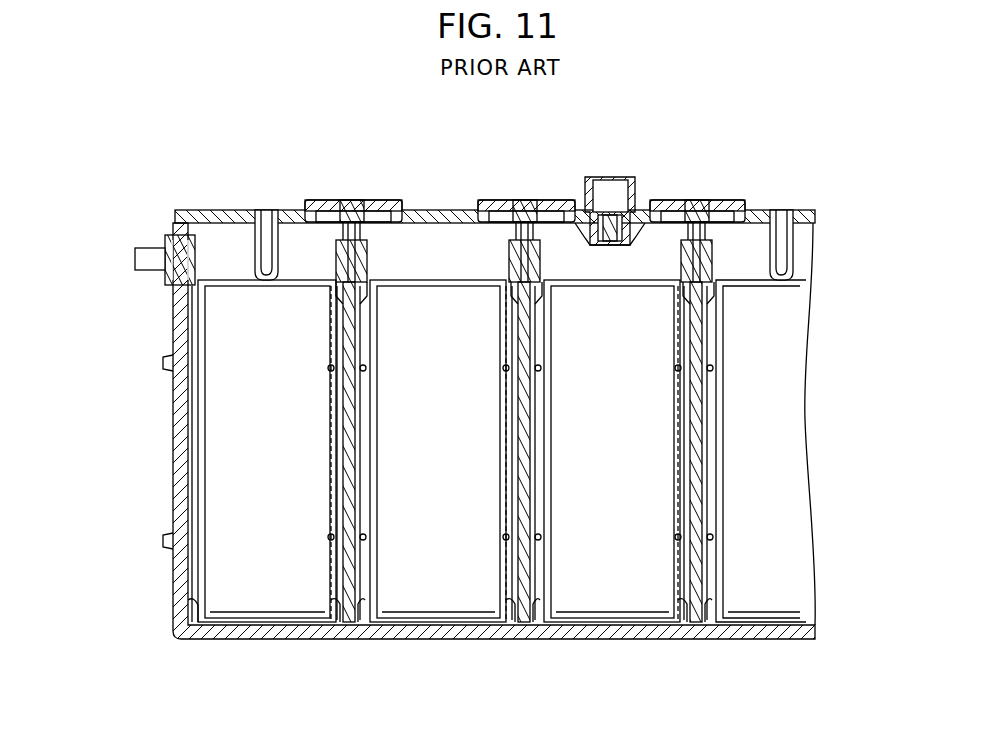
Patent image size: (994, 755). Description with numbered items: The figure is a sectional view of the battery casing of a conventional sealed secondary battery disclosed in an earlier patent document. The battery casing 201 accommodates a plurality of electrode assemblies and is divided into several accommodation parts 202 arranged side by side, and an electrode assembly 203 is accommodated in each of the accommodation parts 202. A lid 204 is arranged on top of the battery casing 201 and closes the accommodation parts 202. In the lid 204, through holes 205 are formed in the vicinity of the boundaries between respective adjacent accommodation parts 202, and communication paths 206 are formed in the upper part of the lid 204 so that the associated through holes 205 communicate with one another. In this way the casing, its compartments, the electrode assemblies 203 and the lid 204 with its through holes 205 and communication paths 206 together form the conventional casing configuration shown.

The battery casing 201 is at (173, 490).
The accommodation parts 202 is at (291, 456).
The electrode assemblies 203 is at (268, 600).
The lid 204 is at (232, 210).
The through holes 205 is at (371, 206).
The communication paths 206 is at (343, 200).